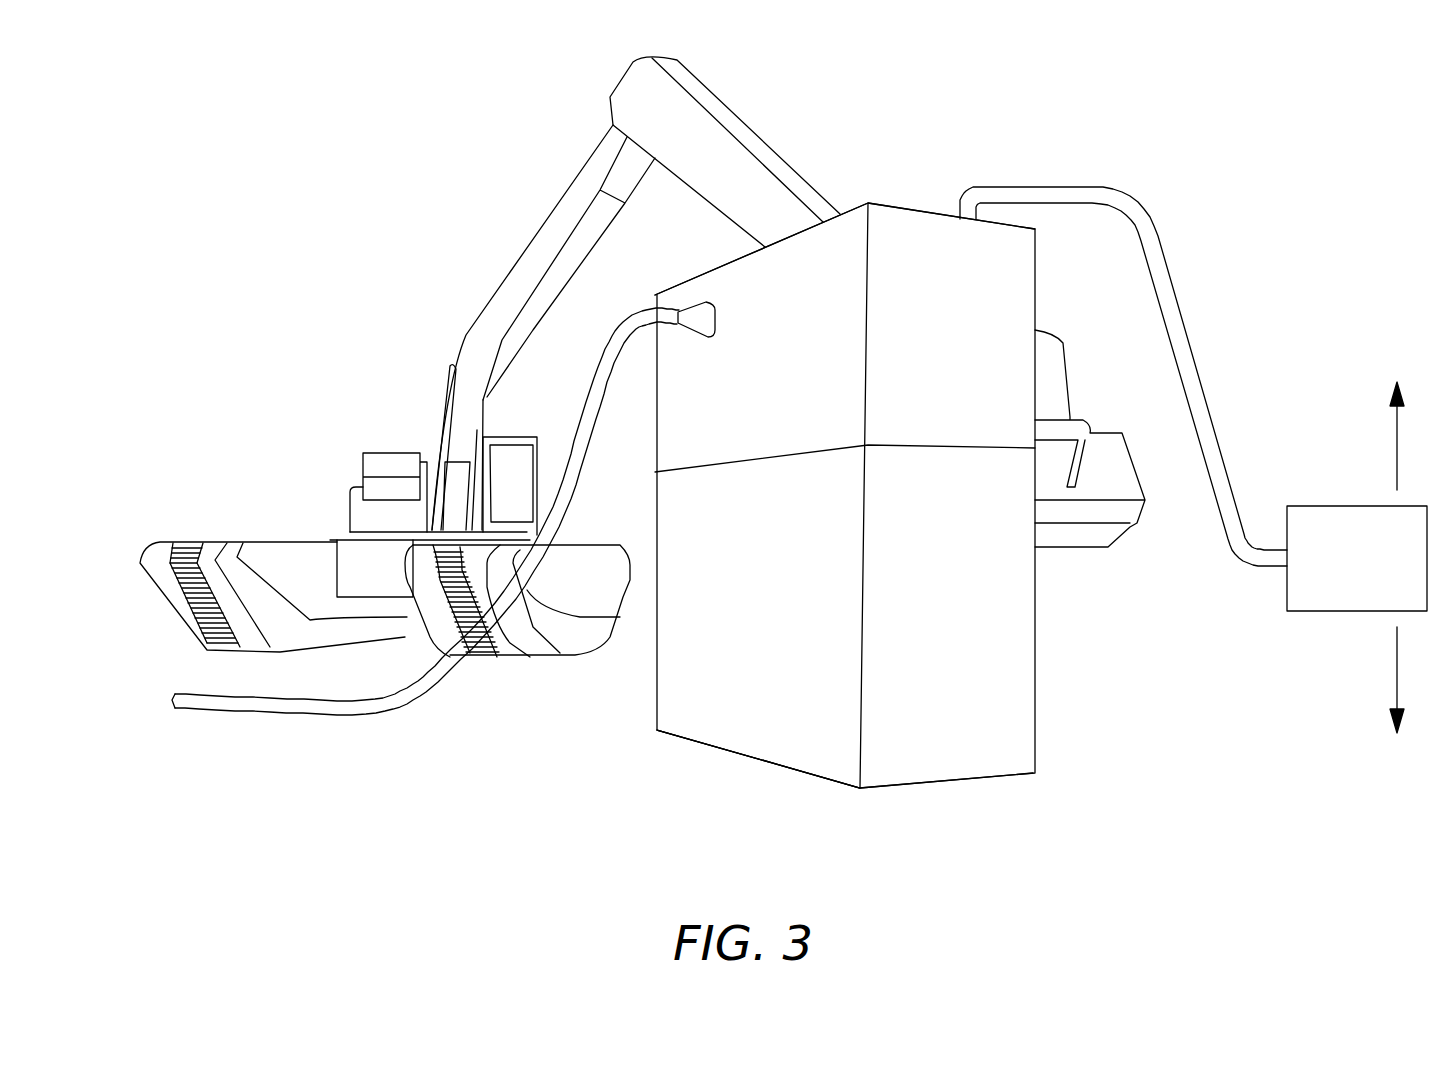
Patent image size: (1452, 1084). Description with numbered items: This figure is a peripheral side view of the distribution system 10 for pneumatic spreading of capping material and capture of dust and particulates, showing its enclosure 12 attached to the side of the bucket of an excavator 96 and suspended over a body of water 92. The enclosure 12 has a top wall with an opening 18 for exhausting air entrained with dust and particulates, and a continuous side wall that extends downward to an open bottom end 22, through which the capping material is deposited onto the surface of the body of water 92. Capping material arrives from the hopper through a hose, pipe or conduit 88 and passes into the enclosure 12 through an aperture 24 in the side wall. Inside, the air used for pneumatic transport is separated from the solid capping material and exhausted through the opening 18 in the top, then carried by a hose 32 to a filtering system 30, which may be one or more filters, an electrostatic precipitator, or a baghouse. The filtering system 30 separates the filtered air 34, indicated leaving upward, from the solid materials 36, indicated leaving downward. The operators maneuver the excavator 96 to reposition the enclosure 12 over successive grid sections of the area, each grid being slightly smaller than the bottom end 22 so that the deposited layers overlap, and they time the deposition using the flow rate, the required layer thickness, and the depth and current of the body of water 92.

The distribution system 10 is at (1068, 643).
The enclosure 12 is at (970, 695).
The opening 18 is at (917, 203).
The open bottom end 22 is at (955, 782).
The aperture 24 is at (693, 313).
The filtering system 30 is at (1317, 612).
The hose 32 is at (1155, 247).
The filtered air 34 is at (1393, 420).
The solid materials 36 is at (1395, 668).
The hose, pipe or conduit 88 is at (580, 430).
The body of water 92 is at (748, 757).
The excavator 96 is at (697, 93).